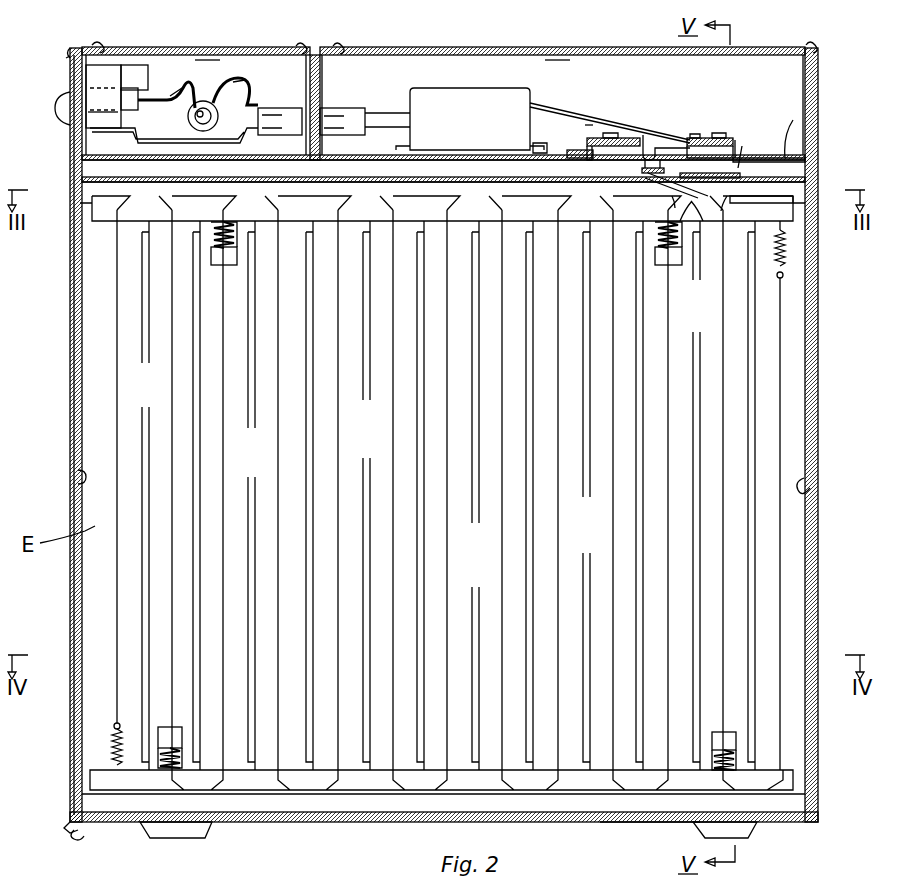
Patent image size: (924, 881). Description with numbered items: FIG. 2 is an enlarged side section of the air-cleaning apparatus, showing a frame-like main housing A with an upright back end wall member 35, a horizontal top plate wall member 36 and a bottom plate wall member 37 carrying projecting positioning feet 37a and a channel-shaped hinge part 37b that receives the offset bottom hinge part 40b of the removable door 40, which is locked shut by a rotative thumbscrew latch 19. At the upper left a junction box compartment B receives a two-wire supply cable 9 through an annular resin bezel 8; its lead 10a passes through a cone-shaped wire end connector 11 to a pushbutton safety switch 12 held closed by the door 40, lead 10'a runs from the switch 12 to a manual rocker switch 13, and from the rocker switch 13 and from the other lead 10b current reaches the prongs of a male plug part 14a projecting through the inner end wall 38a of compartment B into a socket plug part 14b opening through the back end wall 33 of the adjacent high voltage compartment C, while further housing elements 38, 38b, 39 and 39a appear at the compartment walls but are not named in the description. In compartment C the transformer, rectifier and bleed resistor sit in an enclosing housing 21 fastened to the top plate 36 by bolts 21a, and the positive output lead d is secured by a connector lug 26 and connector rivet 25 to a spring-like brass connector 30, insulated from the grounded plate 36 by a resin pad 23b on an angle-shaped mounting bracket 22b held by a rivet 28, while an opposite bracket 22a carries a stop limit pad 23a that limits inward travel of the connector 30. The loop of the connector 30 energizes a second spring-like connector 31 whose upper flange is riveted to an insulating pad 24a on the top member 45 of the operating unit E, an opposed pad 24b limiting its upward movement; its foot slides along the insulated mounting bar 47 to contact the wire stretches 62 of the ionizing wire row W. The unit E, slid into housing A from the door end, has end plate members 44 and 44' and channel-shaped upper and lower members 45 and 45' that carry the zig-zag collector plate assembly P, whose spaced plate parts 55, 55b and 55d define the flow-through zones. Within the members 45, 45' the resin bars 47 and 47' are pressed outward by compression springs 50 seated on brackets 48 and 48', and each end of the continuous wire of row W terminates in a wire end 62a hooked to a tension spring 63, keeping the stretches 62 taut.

The protective resin bezel 8 is at (218, 122).
The two wire lead or cable 9 is at (189, 124).
The lead 10a is at (170, 101).
The lead 10b is at (252, 106).
The lead 10'a is at (161, 84).
The cone-shaped wire end connector 11 is at (171, 96).
The pushbutton safety switch 12 is at (129, 90).
The manual rocker switch 13 is at (88, 118).
The male connector plug part 14a is at (286, 129).
The female or socket plug part 14b is at (341, 115).
The rotative thumbscrew latch 19 is at (56, 110).
The enclosing housing 21 is at (465, 88).
The bolts 21a is at (540, 143).
The second mounting bracket 22a is at (598, 114).
The mounting bracket 22b is at (735, 137).
The insulating stop limit pad 23a is at (632, 146).
The insulating pad 23b is at (664, 166).
The insulating pad 24a is at (643, 177).
The insulating pad 24b is at (730, 196).
The connector rivet 25 is at (700, 136).
The connector lug 26 is at (688, 132).
The bracket mounting rivet 28 is at (586, 149).
The first spring-like connector 30 is at (648, 134).
The second spring-like connector element 31 is at (689, 209).
The back end wall 33 is at (322, 85).
The back end wall member 35 is at (819, 553).
The top plate wall member 36 is at (818, 145).
The bottom plate wall member 37 is at (650, 824).
The positioning feet 37a is at (212, 824).
The hinge part 37b is at (81, 835).
The top wall 38 is at (202, 47).
The inner end wall 38a is at (298, 59).
The corner clip 38b is at (85, 52).
The top wall 39 is at (642, 47).
The hook 39a is at (97, 45).
The door 40 is at (70, 363).
The bottom edge hinge part 40b is at (70, 822).
The end plate member 44 is at (51, 480).
The end plate member 44' is at (831, 485).
The top support member 45 is at (474, 173).
The bottom support member 45' is at (444, 840).
The wire row mounting bar 47 is at (442, 175).
The wire row mounting bar 47' is at (443, 813).
The mounting bracket 48 is at (461, 275).
The mounting bracket 48' is at (447, 711).
The compression spring 50 is at (234, 262).
The plate part 55 is at (200, 478).
The plate part 55b is at (480, 545).
The plate part 55d is at (536, 575).
The wire stretches 62 is at (172, 383).
The wire end 62a is at (114, 725).
The tension spring 63 is at (112, 749).
The main housing unit A is at (769, 130).
The junction box compartment B is at (207, 75).
The high voltage compartment C is at (547, 94).
The electric operating unit E is at (721, 149).
The collector plate assembly P is at (412, 421).
The ionizing wire row W is at (450, 560).
The positive direct current output lead d is at (589, 136).